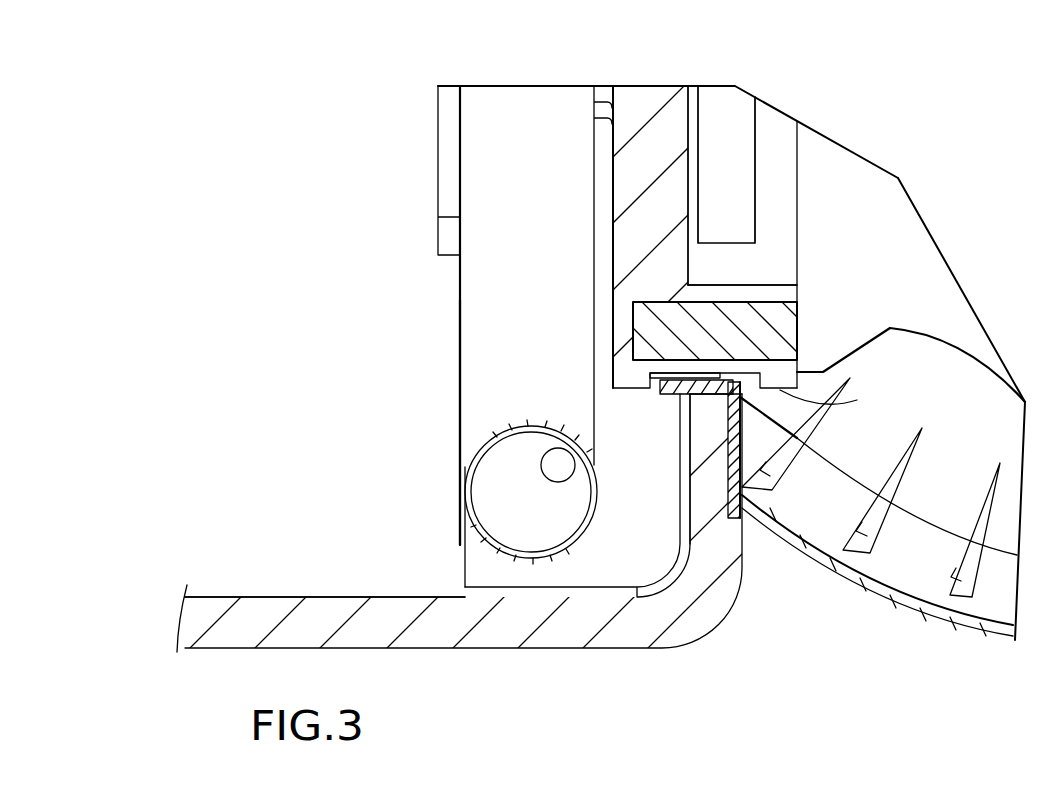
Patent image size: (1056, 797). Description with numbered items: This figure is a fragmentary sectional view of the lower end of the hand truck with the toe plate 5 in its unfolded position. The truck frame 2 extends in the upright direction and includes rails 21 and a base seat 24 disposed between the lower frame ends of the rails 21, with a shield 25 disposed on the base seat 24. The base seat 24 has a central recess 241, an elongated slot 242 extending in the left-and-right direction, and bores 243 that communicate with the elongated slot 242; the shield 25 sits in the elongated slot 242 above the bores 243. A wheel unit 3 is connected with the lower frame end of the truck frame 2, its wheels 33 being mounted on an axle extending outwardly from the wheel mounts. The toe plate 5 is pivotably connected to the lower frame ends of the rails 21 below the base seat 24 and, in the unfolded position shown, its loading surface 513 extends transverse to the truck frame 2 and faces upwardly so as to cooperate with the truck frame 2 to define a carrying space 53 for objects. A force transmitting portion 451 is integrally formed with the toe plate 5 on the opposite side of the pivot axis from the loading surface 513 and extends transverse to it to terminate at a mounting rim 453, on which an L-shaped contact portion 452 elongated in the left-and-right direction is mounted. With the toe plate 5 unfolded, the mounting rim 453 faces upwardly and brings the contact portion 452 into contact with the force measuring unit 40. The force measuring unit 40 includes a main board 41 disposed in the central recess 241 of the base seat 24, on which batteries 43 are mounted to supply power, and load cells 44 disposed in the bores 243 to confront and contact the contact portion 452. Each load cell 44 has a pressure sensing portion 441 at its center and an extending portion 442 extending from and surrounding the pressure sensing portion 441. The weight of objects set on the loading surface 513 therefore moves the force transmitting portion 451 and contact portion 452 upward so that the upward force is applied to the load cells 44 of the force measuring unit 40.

The truck frame 2 is at (425, 152).
The rails 21 is at (523, 267).
The base seat 24 is at (635, 185).
The shield 25 is at (775, 288).
The wheel unit 3 is at (950, 625).
The wheels 33 is at (930, 497).
The force measuring unit 40 is at (760, 162).
The main board 41 is at (690, 138).
The batteries 43 is at (727, 127).
The load cells 44 is at (672, 370).
The central recess 241 is at (770, 210).
The elongated slot 242 is at (772, 305).
The bores 243 is at (857, 400).
The pressure sensing portion 441 is at (785, 372).
The extending portion 442 is at (700, 386).
The mounting rim 453 is at (735, 370).
The force transmitting portion 451 is at (703, 490).
The contact portion 452 is at (745, 467).
The toe plate 5 is at (312, 585).
The loading surface 513 is at (383, 597).
The carrying space 53 is at (297, 423).